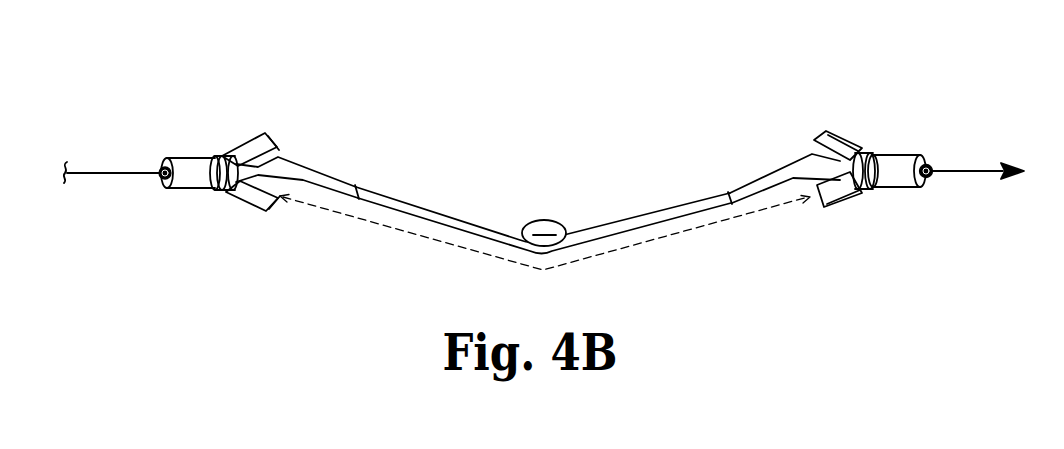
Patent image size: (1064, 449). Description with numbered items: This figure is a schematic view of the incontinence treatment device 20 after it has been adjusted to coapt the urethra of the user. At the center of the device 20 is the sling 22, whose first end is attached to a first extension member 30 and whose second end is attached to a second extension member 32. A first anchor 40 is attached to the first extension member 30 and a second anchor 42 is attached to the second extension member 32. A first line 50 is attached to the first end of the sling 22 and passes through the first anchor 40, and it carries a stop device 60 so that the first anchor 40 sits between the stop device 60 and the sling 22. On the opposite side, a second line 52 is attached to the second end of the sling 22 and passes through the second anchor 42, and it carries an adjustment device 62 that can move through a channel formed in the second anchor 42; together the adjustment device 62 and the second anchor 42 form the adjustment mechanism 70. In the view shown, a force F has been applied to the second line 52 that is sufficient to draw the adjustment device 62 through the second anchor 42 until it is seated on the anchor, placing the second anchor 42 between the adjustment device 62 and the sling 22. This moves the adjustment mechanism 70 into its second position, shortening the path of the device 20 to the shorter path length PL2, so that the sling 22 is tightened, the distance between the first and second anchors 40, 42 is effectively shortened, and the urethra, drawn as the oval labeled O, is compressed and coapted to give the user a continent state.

The incontinence treatment device 20 is at (554, 158).
The sling 22 is at (390, 197).
The first extension member 30 is at (299, 161).
The second extension member 32 is at (793, 163).
The first anchor 40 is at (190, 180).
The second anchor 42 is at (903, 180).
The first line 50 is at (98, 172).
The second line 52 is at (993, 166).
The stop device 60 is at (160, 185).
The adjustment device 62 is at (928, 177).
The adjustment mechanism 70 is at (880, 70).
The pivot point O is at (553, 221).
The shorter path length PL2 is at (696, 231).
The force F is at (1017, 178).